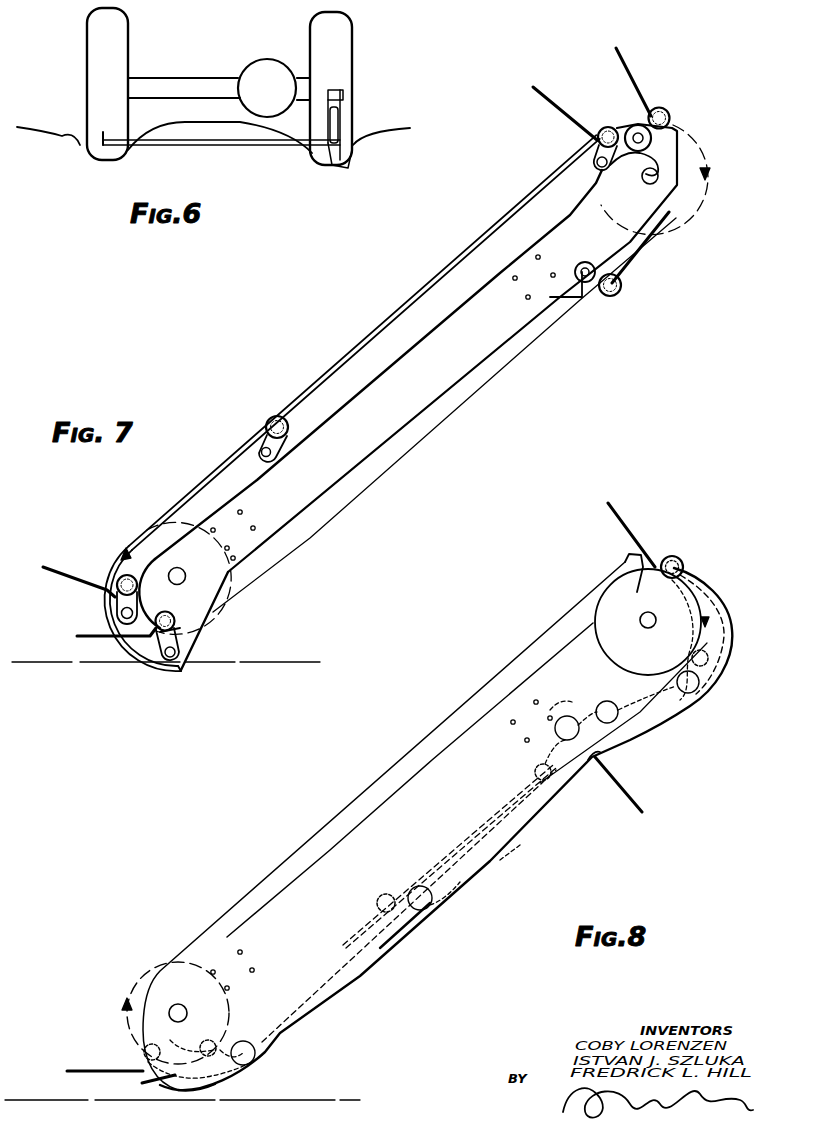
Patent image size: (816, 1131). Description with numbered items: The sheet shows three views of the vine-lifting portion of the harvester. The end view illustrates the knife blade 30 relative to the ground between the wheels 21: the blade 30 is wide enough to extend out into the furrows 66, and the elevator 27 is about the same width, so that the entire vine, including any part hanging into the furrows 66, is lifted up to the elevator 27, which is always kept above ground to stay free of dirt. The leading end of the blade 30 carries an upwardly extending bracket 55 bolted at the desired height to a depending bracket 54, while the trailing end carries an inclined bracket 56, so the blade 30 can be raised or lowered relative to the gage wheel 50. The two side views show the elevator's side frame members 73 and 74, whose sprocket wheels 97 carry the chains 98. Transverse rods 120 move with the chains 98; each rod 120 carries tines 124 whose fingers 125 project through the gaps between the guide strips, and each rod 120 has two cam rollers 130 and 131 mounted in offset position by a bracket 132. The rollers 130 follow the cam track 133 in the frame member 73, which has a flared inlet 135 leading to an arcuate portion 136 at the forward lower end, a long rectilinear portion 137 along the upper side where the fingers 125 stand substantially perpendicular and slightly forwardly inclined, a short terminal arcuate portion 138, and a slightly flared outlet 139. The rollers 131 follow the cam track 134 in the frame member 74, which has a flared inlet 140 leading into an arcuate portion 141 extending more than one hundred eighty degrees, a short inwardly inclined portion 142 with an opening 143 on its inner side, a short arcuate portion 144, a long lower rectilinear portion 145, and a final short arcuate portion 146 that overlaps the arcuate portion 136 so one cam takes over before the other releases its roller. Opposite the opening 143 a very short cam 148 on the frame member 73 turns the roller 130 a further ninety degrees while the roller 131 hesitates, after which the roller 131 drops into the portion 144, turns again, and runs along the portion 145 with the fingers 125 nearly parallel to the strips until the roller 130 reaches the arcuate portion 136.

In FIG. 6, the wheel 21 is at (92, 73).
In FIG. 6, the knife blade 30 is at (238, 146).
In FIG. 6, the gage wheel 50 is at (347, 164).
In FIG. 6, the bracket 54 is at (347, 100).
In FIG. 6, the bracket 55 is at (330, 122).
In FIG. 6, the bracket 56 is at (105, 132).
In FIG. 6, the furrows 66 is at (74, 140).
In FIG. 7, the elevator 27 is at (708, 84).
In FIG. 8, the elevator 27 is at (734, 580).
In FIG. 7, the frame member 73 is at (422, 407).
In FIG. 8, the frame member 74 is at (415, 809).
In FIG. 7, the sprocket wheels 97 is at (218, 555).
In FIG. 8, the sprocket wheels 97 is at (602, 652).
In FIG. 7, the chains 98 is at (399, 330).
In FIG. 8, the chains 98 is at (282, 806).
In FIG. 7, the transverse rods 120 is at (616, 127).
In FIG. 8, the transverse rods 120 is at (670, 558).
In FIG. 7, the tine 124 is at (250, 418).
In FIG. 8, the tine 124 is at (395, 882).
In FIG. 7, the fingers 125 is at (617, 66).
In FIG. 8, the fingers 125 is at (616, 508).
In FIG. 7, the cam roller 130 is at (598, 170).
In FIG. 8, the cam roller 131 is at (664, 598).
In FIG. 8, the bracket 132 is at (397, 939).
In FIG. 7, the cam track 133 is at (349, 342).
In FIG. 8, the cam track 134 is at (470, 888).
In FIG. 7, the flared inlet 135 is at (185, 637).
In FIG. 7, the arcuate portion 136 is at (144, 660).
In FIG. 7, the rectilinear portion 137 is at (202, 492).
In FIG. 7, the terminal arcuate portion 138 is at (630, 116).
In FIG. 7, the flared outlet 139 is at (656, 160).
In FIG. 8, the flared inlet 140 is at (620, 576).
In FIG. 8, the arcuate portion 141 is at (720, 620).
In FIG. 8, the inwardly inclined portion 142 is at (692, 718).
In FIG. 8, the opening 143 is at (568, 702).
In FIG. 8, the short arcuate portion 144 is at (590, 782).
In FIG. 8, the lower rectilinear portion 145 is at (518, 852).
In FIG. 8, the final short arcuate portion 146 is at (202, 1084).
In FIG. 7, the cam 148 is at (580, 266).